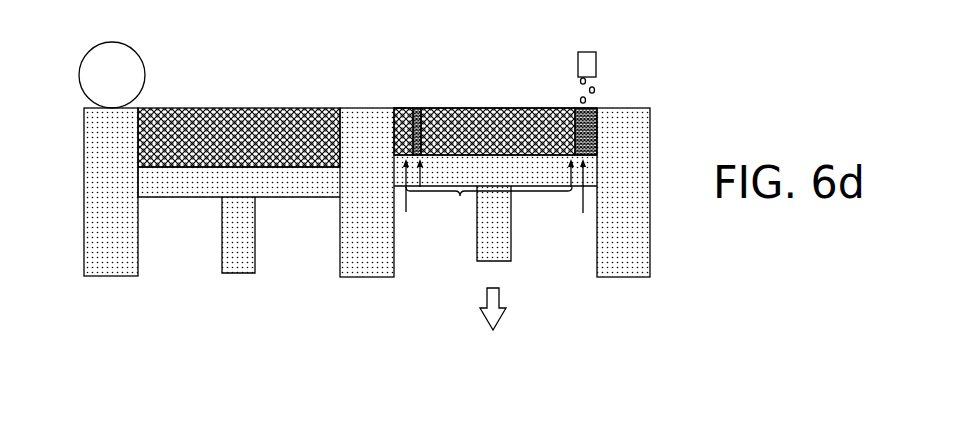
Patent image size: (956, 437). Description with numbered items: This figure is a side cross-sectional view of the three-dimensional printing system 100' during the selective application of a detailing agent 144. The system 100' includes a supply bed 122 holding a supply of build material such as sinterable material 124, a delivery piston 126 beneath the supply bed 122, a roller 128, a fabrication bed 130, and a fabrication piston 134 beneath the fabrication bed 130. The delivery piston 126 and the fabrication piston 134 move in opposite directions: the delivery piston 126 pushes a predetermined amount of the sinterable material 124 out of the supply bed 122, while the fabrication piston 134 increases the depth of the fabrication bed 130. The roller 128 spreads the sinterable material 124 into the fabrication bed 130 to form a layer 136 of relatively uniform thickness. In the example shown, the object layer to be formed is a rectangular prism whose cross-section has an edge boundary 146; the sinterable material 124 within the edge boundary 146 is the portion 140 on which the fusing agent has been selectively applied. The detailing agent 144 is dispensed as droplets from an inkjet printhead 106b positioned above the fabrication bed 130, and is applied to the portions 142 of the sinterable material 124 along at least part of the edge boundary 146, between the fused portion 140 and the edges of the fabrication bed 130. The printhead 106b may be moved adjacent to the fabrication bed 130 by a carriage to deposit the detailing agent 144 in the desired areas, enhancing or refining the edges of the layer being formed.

The 3D printing system 100' is at (356, 141).
The supply bed 122 is at (137, 136).
The sinterable material 124 is at (177, 108).
The delivery piston 126 is at (220, 253).
The roller 128 is at (88, 78).
The fabrication bed 130 is at (397, 130).
The fabrication piston 134 is at (512, 240).
The layer 136 is at (400, 100).
The portion 140 is at (489, 205).
The portions 142 is at (495, 197).
The detailing agent 144 is at (595, 92).
The edge boundary 146 is at (417, 108).
The inkjet printhead 106b is at (578, 62).